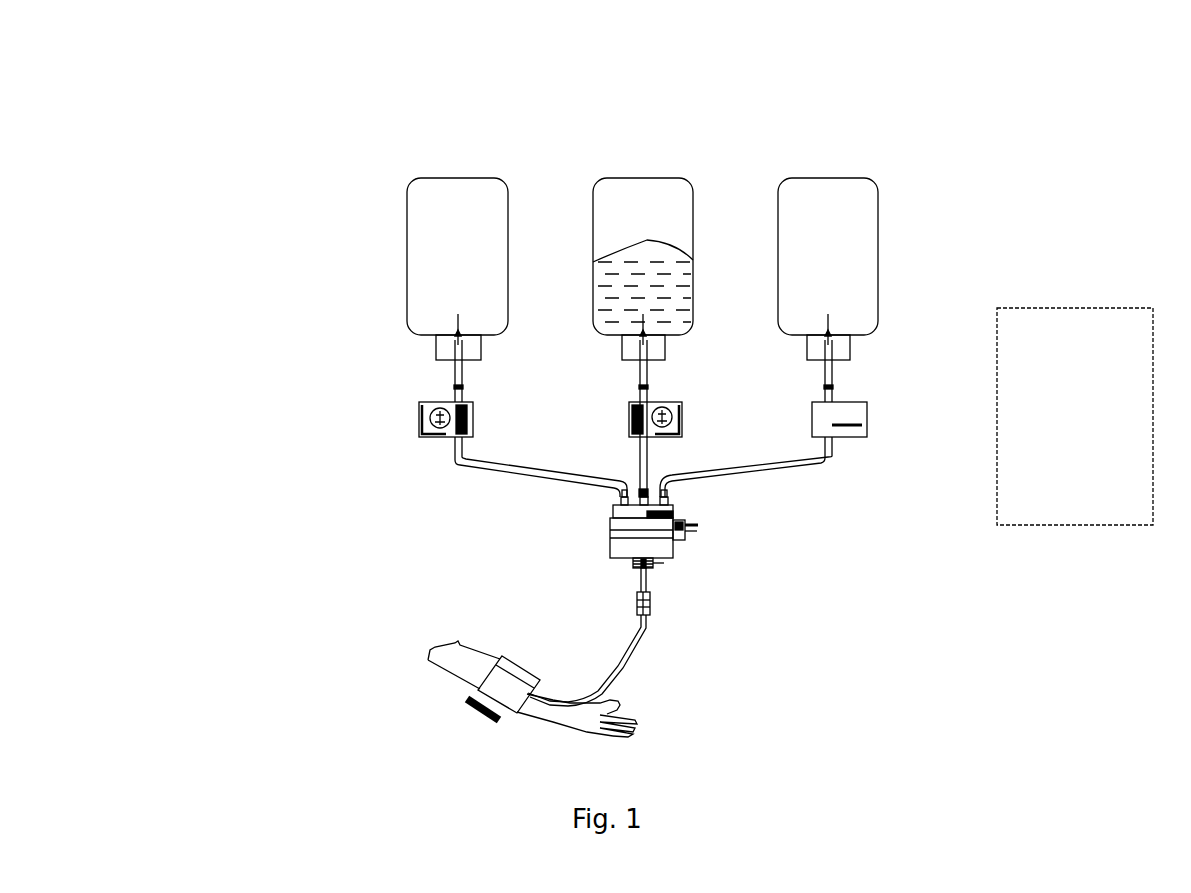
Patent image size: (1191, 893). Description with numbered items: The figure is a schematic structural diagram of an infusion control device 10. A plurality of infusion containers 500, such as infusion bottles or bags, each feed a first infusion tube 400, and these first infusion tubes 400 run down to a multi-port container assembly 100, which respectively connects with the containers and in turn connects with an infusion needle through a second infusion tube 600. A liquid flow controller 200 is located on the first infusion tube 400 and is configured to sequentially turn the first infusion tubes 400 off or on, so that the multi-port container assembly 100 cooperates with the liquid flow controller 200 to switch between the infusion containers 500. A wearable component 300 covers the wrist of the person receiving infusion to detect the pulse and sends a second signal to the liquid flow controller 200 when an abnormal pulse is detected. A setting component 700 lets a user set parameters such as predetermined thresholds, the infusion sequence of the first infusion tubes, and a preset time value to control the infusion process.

The infusion control device 10 is at (176, 116).
The multi-port container assembly 100 is at (632, 550).
The liquid flow controller 200 is at (423, 422).
The wearable component 300 is at (503, 686).
The first infusion tubes 400 is at (456, 381).
The infusion containers 500 is at (445, 220).
The second infusion tube 600 is at (642, 642).
The setting component 700 is at (1057, 340).